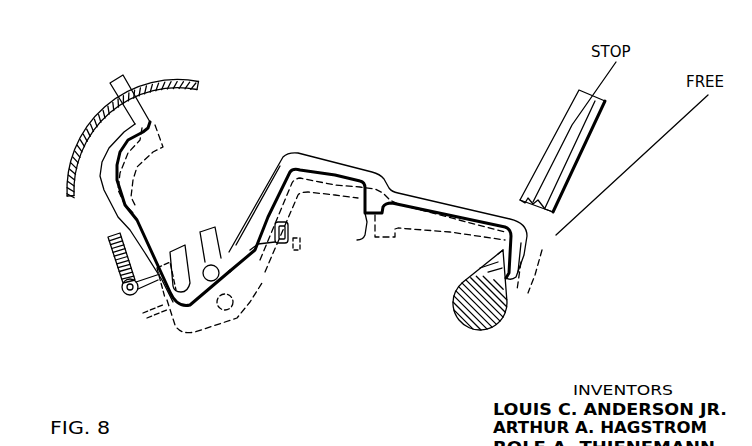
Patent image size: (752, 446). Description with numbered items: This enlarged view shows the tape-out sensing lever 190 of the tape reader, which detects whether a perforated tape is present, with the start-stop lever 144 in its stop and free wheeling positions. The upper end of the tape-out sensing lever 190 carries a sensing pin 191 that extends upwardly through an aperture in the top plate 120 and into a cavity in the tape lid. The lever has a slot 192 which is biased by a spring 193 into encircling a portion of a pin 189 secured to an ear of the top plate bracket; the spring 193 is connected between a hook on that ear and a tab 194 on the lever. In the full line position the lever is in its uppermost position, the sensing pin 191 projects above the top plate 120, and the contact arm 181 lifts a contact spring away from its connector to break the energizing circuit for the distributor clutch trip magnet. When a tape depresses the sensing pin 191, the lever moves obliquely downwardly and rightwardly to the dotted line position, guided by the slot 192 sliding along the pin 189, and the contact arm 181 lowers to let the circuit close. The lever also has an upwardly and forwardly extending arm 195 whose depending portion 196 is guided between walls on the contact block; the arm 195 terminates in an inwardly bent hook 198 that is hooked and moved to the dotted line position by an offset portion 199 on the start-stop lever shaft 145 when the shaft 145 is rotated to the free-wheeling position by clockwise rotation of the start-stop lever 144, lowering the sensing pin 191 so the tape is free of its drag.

The top plate 120 is at (192, 80).
The start-stop lever 144 is at (572, 116).
The start-stop lever shaft 145 is at (505, 322).
The contact arm 181 is at (289, 226).
The pin 189 is at (205, 278).
The tape-out sensing lever 190 is at (310, 149).
The sensing pin 191 is at (118, 77).
The slot 192 is at (199, 233).
The spring 193 is at (108, 257).
The tab 194 is at (140, 295).
The arm 195 is at (273, 178).
The depending portion 196 is at (357, 240).
The hook 198 is at (528, 243).
The offset portion 199 is at (498, 254).